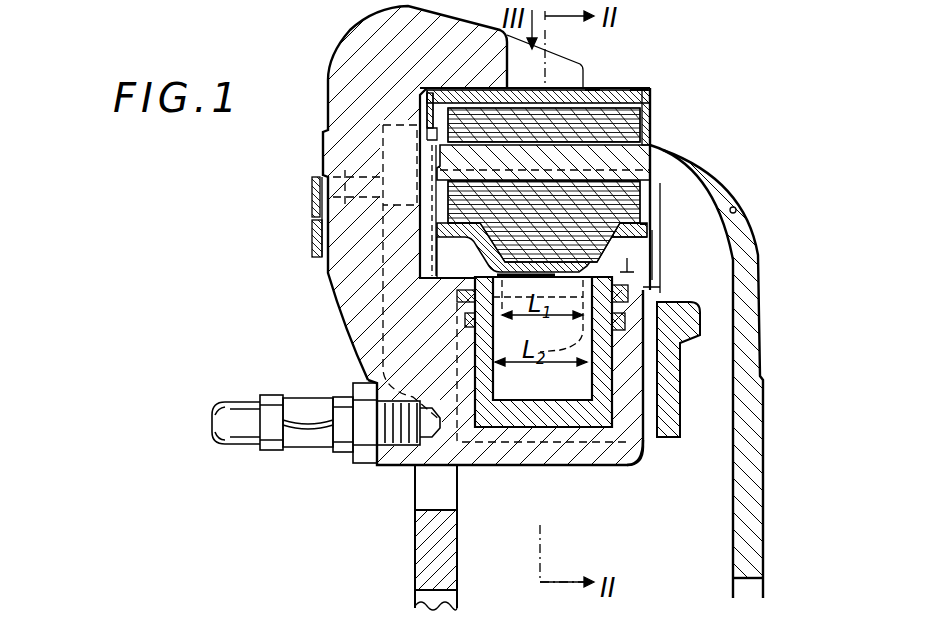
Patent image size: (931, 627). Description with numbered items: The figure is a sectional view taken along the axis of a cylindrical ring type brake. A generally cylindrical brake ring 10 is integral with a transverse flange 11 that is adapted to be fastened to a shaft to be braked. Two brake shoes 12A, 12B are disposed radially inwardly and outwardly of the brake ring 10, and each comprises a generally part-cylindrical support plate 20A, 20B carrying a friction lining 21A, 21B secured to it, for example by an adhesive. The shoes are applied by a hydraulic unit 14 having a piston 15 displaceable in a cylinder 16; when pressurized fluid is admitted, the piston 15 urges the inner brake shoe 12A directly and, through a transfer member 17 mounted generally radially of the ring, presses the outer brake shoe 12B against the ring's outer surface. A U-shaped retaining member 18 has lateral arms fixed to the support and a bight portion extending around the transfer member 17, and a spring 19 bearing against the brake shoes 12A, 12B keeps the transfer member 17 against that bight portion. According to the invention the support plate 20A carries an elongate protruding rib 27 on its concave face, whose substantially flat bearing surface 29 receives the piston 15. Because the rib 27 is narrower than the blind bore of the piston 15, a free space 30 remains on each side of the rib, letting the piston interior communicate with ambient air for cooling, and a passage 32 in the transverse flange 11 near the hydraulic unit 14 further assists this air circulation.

The cylindrical brake ring 10 is at (592, 92).
The transverse flange 11 is at (770, 375).
The brake shoe 12A is at (660, 195).
The brake shoe 12B is at (662, 110).
The hydraulic unit 14 is at (652, 452).
The piston 15 is at (618, 405).
The cylinder 16 is at (490, 405).
The transfer member 17 is at (334, 337).
The U-shaped retaining member 18 is at (318, 170).
The spring 19 is at (442, 122).
The support plate 20A is at (632, 228).
The support plate 20B is at (648, 88).
The friction lining 21A is at (499, 200).
The friction lining 21B is at (648, 131).
The protruding rib 27 is at (647, 240).
The bearing surface 29 is at (567, 268).
The free space 30 is at (480, 257).
The passage 32 is at (743, 197).